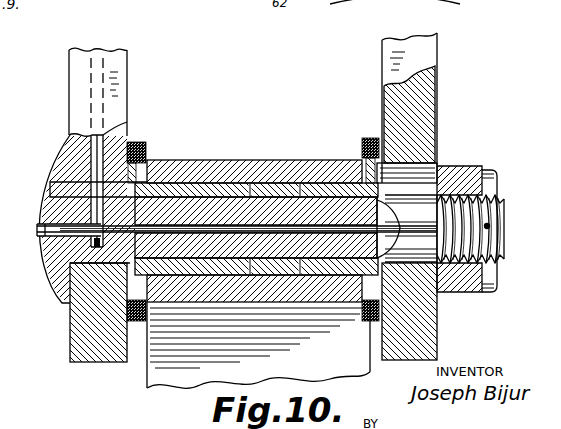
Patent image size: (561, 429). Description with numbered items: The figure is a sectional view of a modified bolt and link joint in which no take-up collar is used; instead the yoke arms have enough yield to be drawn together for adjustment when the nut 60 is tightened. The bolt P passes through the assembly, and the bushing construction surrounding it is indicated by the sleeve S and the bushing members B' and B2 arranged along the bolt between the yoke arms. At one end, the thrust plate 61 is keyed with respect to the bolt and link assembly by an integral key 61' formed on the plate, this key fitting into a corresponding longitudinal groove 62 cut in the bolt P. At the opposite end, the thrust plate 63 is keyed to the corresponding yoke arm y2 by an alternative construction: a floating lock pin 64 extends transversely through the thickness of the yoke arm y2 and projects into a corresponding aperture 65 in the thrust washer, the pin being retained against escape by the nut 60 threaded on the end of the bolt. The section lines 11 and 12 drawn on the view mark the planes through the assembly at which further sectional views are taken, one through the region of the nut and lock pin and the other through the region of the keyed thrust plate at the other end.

The section line 12- 12 is at (84, 35).
The thrust plate 61 is at (75, 114).
The integral key 61' is at (76, 312).
The sleeve S is at (258, 163).
The bearing ring B' is at (256, 203).
The bolt P is at (302, 202).
The longitudinal groove 62 is at (335, 257).
The packing B2 is at (366, 138).
The yoke arm y2 is at (418, 53).
The section line 11- 11 is at (470, 88).
The aperture 65 is at (427, 170).
The floating lock pin 64 is at (440, 168).
The nut 60 is at (483, 277).
The thrust plate 63 is at (392, 298).